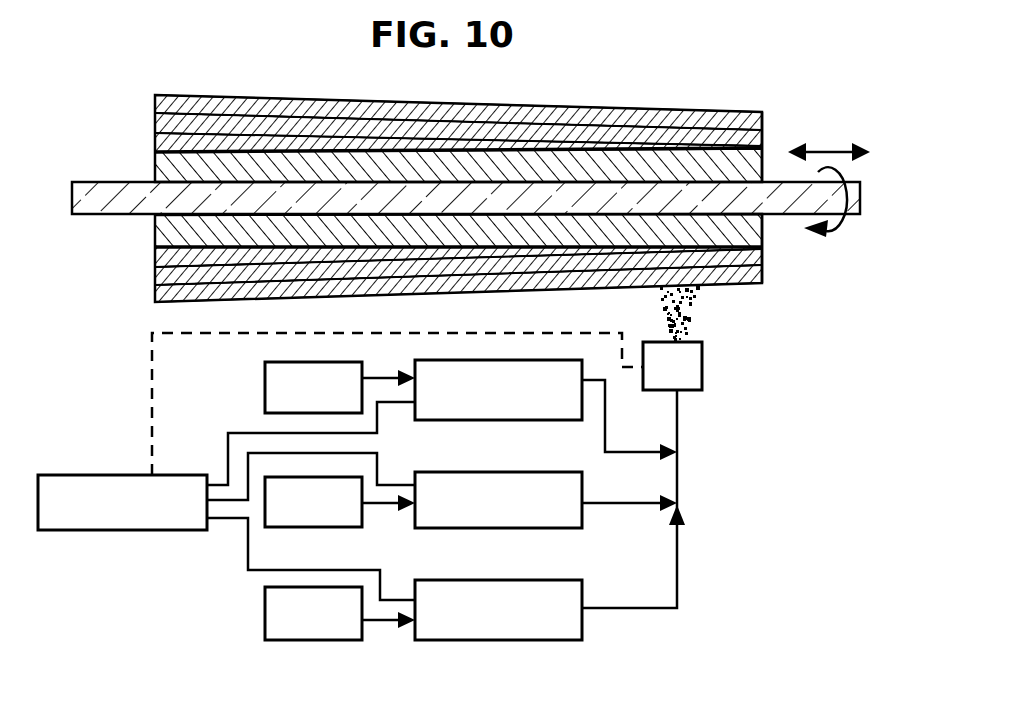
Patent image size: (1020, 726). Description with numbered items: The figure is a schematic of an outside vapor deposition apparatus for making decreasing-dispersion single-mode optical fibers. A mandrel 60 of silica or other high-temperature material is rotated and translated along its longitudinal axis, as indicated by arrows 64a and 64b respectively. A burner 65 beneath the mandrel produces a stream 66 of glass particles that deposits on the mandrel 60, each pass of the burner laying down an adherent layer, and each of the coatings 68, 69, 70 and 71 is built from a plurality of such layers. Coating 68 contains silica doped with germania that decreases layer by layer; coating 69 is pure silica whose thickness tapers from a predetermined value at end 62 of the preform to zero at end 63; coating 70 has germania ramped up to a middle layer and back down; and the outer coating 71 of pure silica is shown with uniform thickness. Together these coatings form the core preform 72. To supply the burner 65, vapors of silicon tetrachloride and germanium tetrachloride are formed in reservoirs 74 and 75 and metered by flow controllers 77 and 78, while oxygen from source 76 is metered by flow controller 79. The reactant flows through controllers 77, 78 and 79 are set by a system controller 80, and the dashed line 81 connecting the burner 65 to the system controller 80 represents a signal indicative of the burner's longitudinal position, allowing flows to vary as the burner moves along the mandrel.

The mandrel 60 is at (120, 181).
The end of the preform 62 is at (154, 143).
The end of the preform 63 is at (762, 258).
The rotation arrow 64a is at (845, 226).
The translation arrow 64b is at (825, 150).
The burner 65 is at (690, 390).
The stream of glass particles 66 is at (686, 315).
The coating 68 is at (155, 233).
The coating 69 is at (155, 261).
The coating 70 is at (158, 277).
The outer coating 71 is at (167, 297).
The core preform 72 is at (592, 75).
The SiCl4 reservoir 74 is at (265, 396).
The GeCl4 reservoir 75 is at (283, 528).
The oxygen source 76 is at (265, 610).
The flow controller 77 is at (508, 421).
The flow controller 78 is at (508, 529).
The flow controller 79 is at (508, 641).
The system controller 80 is at (80, 475).
The dashed line 81 is at (150, 427).